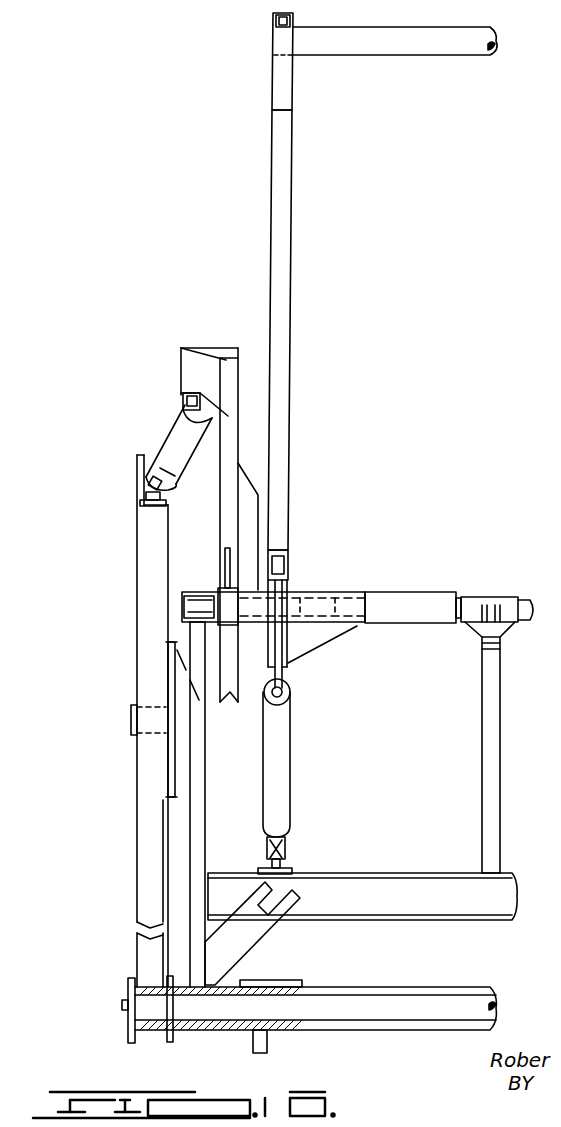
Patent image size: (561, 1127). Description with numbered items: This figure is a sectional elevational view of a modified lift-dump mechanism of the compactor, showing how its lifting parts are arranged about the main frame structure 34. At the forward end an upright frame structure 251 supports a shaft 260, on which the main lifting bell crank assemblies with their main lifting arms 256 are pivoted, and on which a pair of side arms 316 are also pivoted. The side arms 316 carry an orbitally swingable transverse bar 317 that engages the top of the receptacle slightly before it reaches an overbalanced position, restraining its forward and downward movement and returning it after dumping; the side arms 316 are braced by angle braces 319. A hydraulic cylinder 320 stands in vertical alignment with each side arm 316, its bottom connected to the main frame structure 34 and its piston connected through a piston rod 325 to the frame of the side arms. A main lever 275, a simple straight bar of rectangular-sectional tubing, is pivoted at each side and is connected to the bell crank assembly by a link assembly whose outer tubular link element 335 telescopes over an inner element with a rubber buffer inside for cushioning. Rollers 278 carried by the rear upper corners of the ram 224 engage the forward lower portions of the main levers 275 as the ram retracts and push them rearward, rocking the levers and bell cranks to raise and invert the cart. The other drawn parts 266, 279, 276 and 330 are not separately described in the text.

The side arms 316 is at (275, 78).
The transverse bar 317 is at (405, 47).
The angle braces 319 is at (288, 232).
The mast 266 is at (236, 506).
The outer tubular link element 335 is at (166, 422).
The main levers 275 is at (140, 552).
The block 279 is at (131, 712).
The upright frame structure 251 is at (238, 765).
The shaft 260 is at (357, 592).
The piston rod 325 is at (289, 666).
The main lifting arms 256 is at (290, 695).
The hydraulic cylinder 320 is at (285, 752).
The cylinder foot 330 is at (286, 856).
The main frame structure 34 is at (381, 872).
The ram 224 is at (292, 960).
The bottom beam 276 is at (398, 975).
The rollers 278 is at (128, 1029).